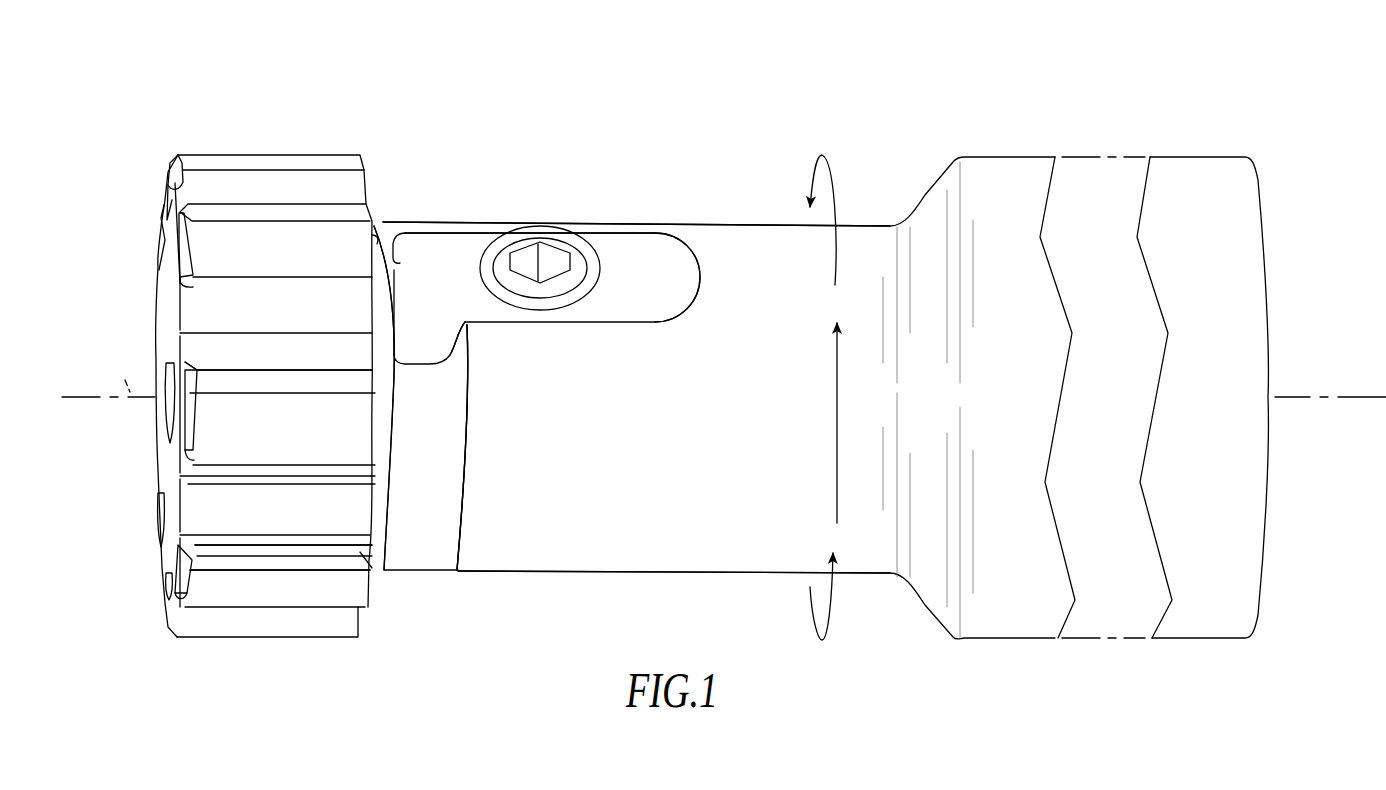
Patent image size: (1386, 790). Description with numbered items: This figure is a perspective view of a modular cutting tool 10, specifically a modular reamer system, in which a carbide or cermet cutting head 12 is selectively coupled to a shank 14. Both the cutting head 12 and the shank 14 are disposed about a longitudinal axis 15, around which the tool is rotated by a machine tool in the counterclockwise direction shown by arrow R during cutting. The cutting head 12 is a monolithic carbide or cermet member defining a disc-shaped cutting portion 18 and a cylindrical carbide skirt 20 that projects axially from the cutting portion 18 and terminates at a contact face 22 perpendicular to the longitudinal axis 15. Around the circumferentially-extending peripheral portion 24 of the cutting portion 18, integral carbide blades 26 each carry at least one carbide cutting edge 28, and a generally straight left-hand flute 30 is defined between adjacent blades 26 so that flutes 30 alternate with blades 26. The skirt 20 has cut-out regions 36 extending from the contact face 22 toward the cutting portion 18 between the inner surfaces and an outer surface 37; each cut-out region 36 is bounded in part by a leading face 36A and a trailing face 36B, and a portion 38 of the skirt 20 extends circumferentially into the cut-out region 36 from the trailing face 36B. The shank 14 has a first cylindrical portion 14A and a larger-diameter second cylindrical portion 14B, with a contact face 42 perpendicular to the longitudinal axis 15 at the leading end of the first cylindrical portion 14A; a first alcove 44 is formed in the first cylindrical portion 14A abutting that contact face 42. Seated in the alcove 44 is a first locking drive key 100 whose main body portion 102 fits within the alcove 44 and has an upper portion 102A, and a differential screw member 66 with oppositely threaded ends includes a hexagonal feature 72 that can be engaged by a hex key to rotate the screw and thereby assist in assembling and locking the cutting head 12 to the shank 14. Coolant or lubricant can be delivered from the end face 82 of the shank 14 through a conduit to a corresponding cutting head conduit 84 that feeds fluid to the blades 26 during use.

The modular cutting tool 10 is at (580, 110).
The cutting head 12 is at (286, 152).
The shank 14 is at (770, 215).
The first cylindrical portion 14A is at (770, 535).
The second cylindrical portion 14B is at (1205, 615).
The longitudinal axis 15 is at (130, 375).
The cutting portion 18 is at (200, 293).
The skirt 20 is at (425, 547).
The contact face 22 is at (465, 525).
The peripheral portion 24 is at (205, 152).
The carbide blades 26 is at (283, 387).
The cutting edge 28 is at (227, 363).
The flute 30 is at (215, 476).
The cut-out region 36 is at (393, 222).
The leading face 36A is at (445, 272).
The trailing face 36B is at (422, 353).
The outer surface 37 is at (402, 540).
The portion of skirt 38 is at (455, 342).
The contact face 42 is at (462, 470).
The first alcove 44 is at (590, 237).
The differential screw member 66 is at (575, 268).
The feature 72 is at (530, 255).
The end face 82 is at (1263, 215).
The cutting head conduit 84 is at (160, 410).
The first locking drive key 100 is at (645, 250).
The main body portion 102 is at (690, 283).
The upper portion 102A is at (415, 305).
The arrow R is at (835, 440).